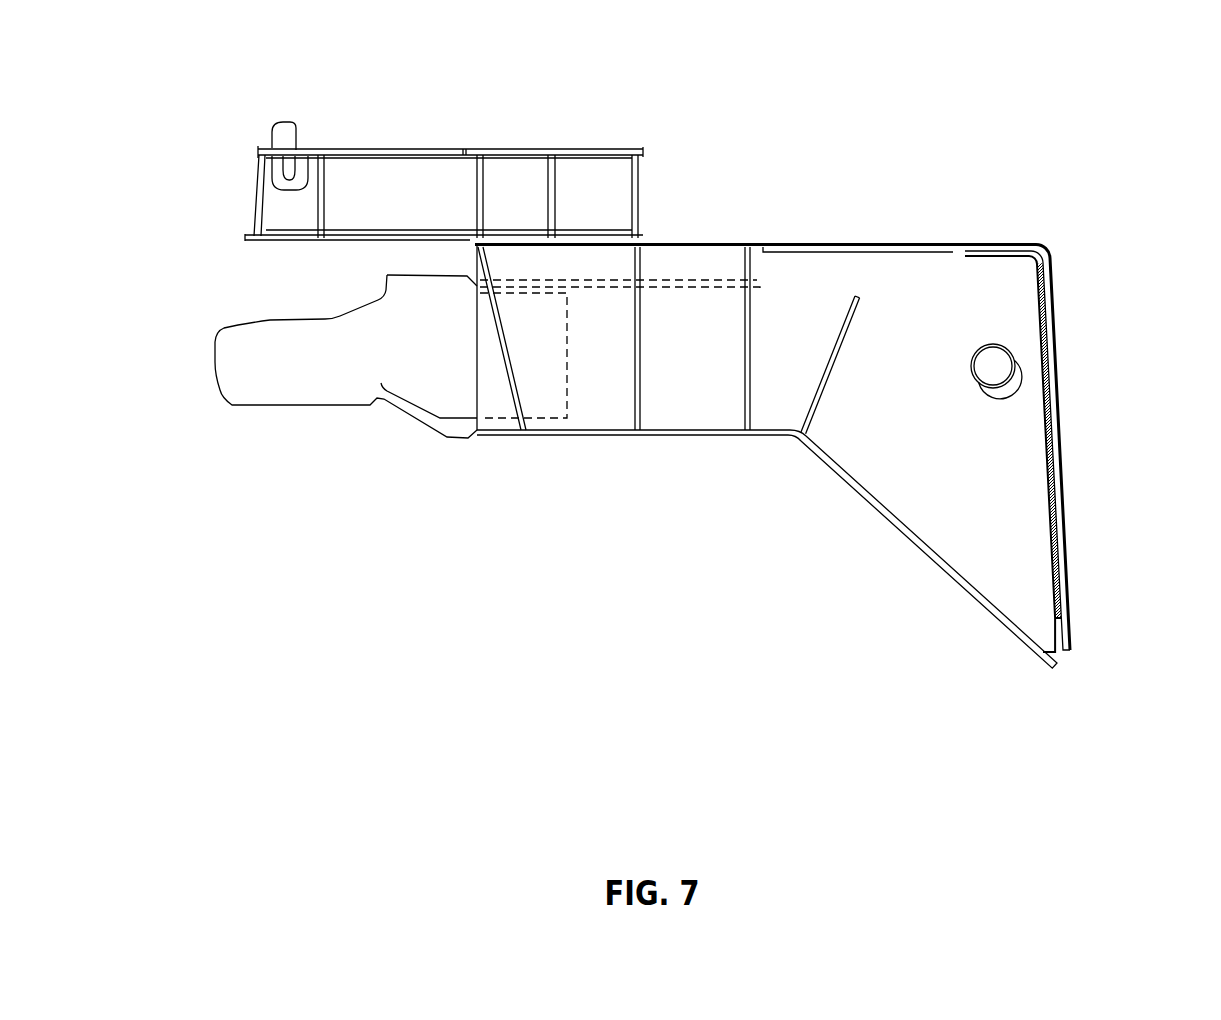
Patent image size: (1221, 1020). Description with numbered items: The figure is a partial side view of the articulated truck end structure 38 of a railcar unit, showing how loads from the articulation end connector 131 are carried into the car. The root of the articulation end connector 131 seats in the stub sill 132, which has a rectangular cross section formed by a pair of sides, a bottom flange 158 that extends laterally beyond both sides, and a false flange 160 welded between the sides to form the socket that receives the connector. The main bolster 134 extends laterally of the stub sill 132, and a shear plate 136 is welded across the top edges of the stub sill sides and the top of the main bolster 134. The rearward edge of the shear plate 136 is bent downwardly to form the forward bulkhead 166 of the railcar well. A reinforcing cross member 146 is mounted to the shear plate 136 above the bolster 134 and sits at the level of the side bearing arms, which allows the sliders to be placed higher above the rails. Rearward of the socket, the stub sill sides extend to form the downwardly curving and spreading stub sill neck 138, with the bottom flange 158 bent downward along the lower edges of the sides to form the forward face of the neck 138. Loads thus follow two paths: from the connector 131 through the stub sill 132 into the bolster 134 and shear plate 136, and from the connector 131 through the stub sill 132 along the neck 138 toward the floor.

The articulated truck end structure 38 is at (1063, 288).
The articulation end connector 131 is at (283, 420).
The stub sill 132 is at (726, 416).
The main bolster 134 is at (655, 400).
The shear plate 136 is at (752, 228).
The stub sill neck 138 is at (938, 536).
The reinforcing cross member 146 is at (588, 140).
The bottom flange 158 is at (523, 450).
The false flange 160 is at (689, 269).
The forward bulkhead 166 is at (1073, 457).